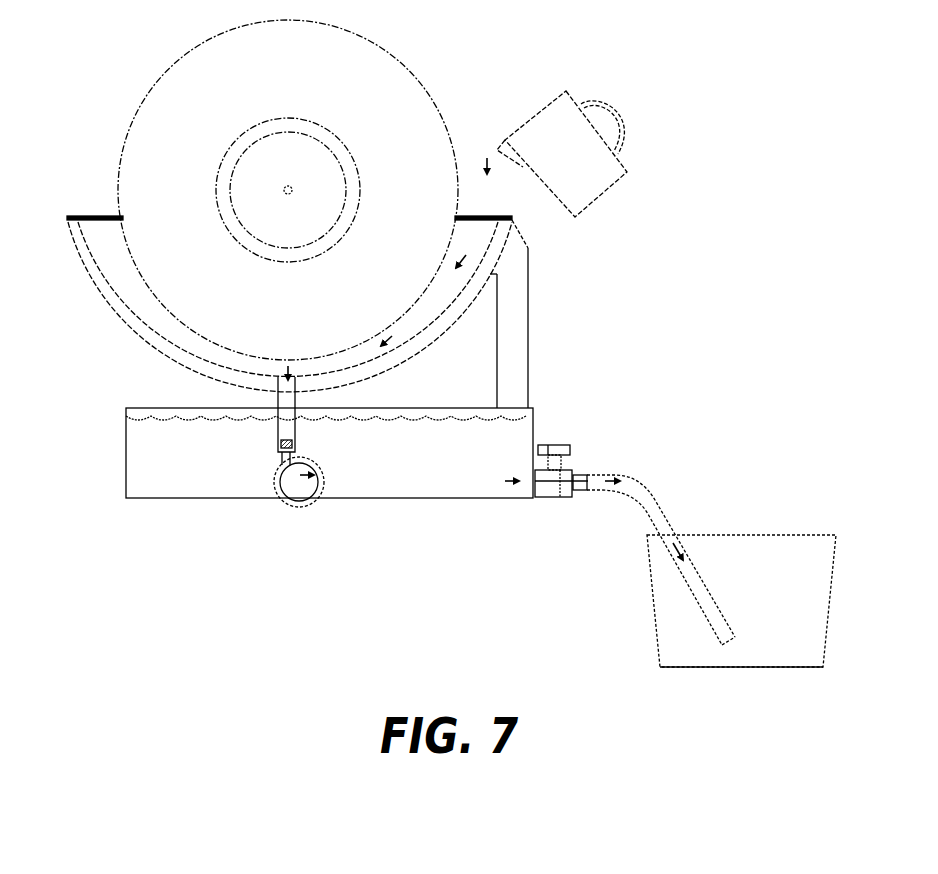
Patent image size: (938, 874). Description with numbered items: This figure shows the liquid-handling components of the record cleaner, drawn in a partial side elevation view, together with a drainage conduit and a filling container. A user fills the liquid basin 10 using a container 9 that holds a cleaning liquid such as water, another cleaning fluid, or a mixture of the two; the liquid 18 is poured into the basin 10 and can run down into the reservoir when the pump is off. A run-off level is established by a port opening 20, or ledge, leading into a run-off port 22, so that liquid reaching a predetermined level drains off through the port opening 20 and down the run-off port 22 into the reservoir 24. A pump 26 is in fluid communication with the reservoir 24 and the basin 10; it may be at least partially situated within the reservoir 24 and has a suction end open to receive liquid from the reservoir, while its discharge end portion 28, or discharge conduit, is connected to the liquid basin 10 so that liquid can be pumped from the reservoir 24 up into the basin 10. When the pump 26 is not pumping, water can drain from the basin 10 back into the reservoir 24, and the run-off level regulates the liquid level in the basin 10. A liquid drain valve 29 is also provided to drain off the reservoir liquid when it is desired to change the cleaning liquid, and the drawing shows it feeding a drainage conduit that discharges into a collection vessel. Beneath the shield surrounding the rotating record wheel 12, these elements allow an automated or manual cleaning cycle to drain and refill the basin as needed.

The container 9 is at (603, 180).
The liquid basin 10 is at (88, 262).
The grinding wheel 12 is at (166, 78).
The liquid 18 is at (163, 443).
The port opening 20 is at (491, 273).
The run-off port 22 is at (517, 343).
The reservoir 24 is at (148, 482).
The pump 26 is at (283, 490).
The discharge end portion 28 is at (283, 401).
The liquid drain valve 29 is at (568, 472).